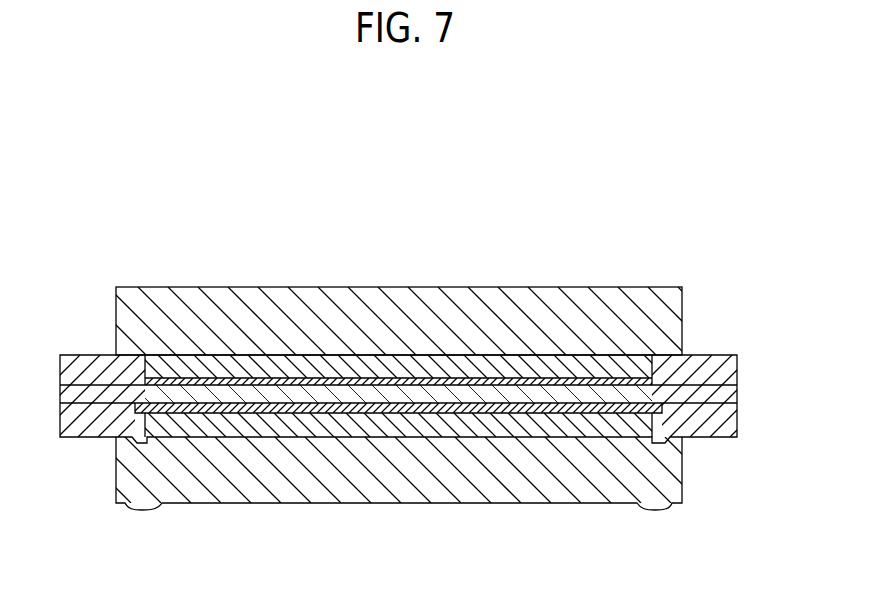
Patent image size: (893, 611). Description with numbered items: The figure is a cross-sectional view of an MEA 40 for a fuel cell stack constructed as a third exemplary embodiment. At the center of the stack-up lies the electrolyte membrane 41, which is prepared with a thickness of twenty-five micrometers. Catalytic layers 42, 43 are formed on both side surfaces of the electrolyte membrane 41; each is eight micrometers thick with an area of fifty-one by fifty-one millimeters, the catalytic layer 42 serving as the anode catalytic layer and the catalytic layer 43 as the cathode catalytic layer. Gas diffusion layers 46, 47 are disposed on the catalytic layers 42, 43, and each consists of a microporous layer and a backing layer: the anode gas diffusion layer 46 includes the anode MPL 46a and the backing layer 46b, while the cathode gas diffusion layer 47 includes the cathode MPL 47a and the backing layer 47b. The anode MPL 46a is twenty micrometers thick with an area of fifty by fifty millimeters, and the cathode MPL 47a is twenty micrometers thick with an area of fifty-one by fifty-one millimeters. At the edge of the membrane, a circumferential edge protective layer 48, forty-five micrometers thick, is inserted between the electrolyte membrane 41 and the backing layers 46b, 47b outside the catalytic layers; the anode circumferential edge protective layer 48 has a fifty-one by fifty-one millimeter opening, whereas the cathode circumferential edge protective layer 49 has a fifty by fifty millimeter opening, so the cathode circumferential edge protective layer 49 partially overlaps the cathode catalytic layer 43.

The MEA 40 is at (388, 165).
The electrolyte membrane 41 is at (739, 393).
The catalytic layer 42 is at (470, 378).
The catalytic layer 43 is at (457, 414).
The gas diffusion layer 46 is at (397, 290).
The anode MPL 46a is at (538, 380).
The backing layer 46b is at (608, 306).
The gas diffusion layer 47 is at (398, 501).
The cathode MPL 47a is at (523, 413).
The backing layer 47b is at (596, 485).
The circumferential edge protective layer 48 is at (710, 363).
The cathode circumferential edge protective layer 49 is at (710, 438).